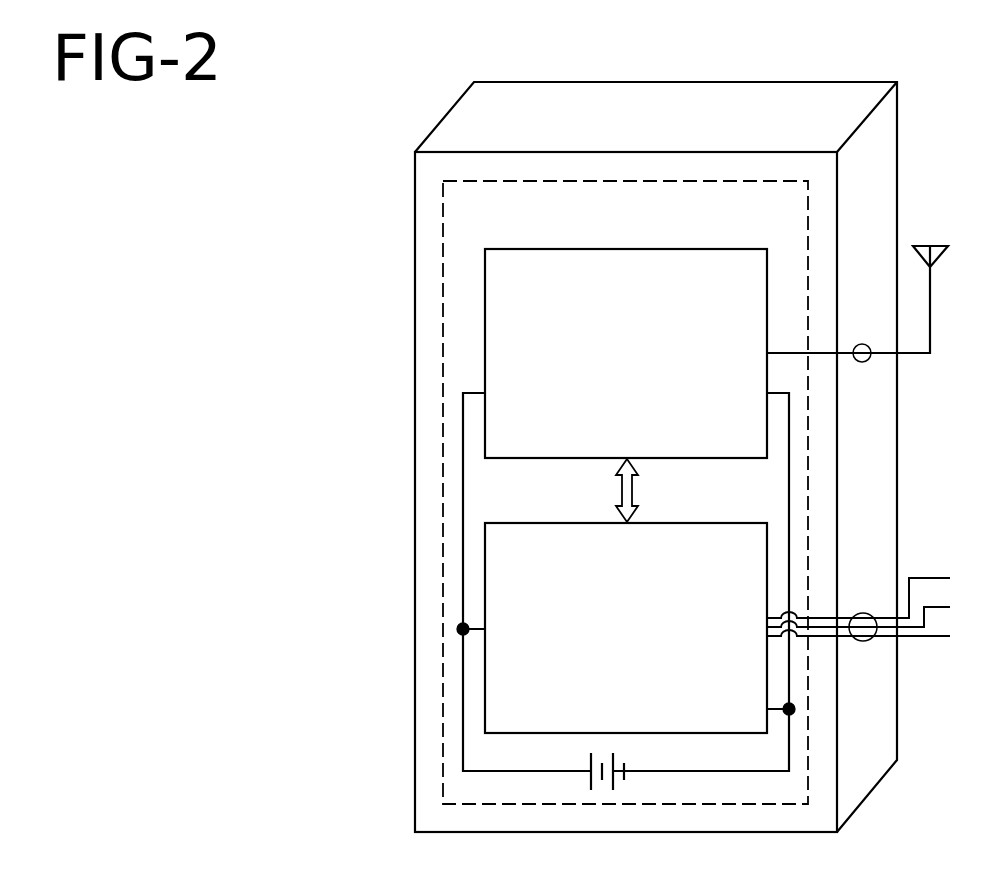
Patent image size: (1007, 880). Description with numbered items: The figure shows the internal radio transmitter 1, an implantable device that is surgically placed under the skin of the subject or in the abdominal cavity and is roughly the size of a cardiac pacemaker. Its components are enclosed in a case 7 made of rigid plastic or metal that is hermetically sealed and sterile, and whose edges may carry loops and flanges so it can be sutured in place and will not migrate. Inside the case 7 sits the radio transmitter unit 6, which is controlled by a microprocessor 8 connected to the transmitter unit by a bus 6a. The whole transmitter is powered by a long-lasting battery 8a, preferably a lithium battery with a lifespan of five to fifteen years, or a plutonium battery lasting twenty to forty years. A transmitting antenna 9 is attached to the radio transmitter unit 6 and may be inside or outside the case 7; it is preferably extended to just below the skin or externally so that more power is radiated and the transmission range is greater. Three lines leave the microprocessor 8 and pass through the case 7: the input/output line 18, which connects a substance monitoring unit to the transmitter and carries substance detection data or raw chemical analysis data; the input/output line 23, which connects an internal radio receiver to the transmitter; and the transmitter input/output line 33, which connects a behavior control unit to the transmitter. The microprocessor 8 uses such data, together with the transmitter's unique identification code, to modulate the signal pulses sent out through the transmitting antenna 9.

The internal radio transmitter 1 is at (457, 201).
The radio transmitter unit 6 is at (497, 373).
The bus 6a is at (615, 490).
The case 7 is at (822, 773).
The microprocessor 8 is at (497, 682).
The battery 8a is at (591, 775).
The transmitting antenna 9 is at (938, 246).
The input/output line 18 is at (958, 631).
The input/output line 23 is at (958, 573).
The transmitter input/output line 33 is at (958, 602).